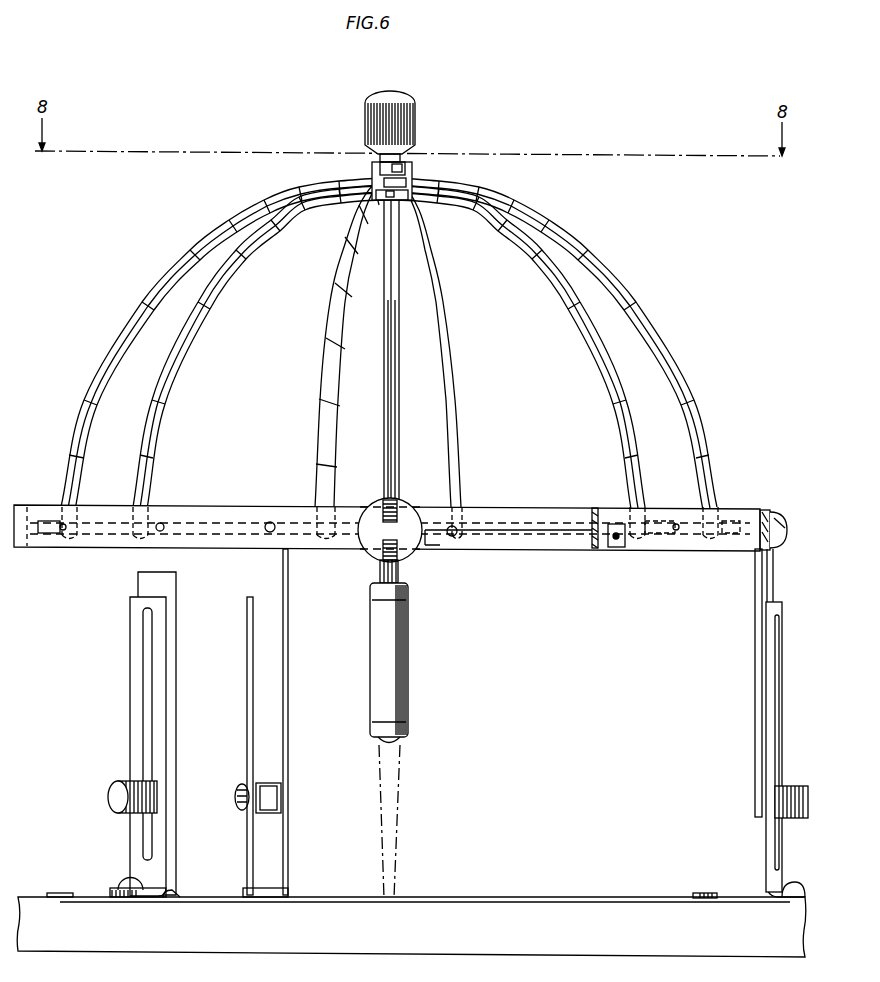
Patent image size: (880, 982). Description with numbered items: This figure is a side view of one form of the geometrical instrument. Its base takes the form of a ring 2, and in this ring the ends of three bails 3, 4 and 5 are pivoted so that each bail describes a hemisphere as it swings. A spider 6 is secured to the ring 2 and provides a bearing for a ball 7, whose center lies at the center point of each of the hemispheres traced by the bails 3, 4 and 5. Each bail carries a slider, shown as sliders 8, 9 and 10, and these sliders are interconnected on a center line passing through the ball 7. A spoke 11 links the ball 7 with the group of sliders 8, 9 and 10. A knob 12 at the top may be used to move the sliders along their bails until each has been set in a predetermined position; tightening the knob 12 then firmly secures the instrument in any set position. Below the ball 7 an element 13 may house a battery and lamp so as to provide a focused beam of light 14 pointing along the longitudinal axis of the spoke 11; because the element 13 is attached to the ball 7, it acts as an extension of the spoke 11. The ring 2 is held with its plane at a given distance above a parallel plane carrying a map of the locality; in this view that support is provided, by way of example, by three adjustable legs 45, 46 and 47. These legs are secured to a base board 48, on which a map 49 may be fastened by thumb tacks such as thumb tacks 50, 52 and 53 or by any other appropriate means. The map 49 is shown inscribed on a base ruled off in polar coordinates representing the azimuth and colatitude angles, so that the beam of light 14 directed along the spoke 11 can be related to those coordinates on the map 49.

The ring 2 is at (196, 505).
The bail 3 is at (327, 366).
The bail 4 is at (123, 336).
The bail 5 is at (183, 352).
The spider 6 is at (481, 533).
The ball 7 is at (404, 508).
The slider 8 is at (403, 167).
The slider 9 is at (407, 184).
The slider 10 is at (393, 215).
The spoke 11 is at (396, 345).
The knob 12 is at (414, 122).
The element 13 is at (408, 668).
The focused beam of light 14 is at (392, 794).
The adjustable leg 45 is at (764, 651).
The adjustable leg 46 is at (283, 651).
The adjustable leg 47 is at (176, 650).
The base board 48 is at (557, 953).
The map 49 is at (500, 900).
The thumb tack 50 is at (708, 893).
The thumb tack 52 is at (62, 892).
The thumb tack 53 is at (175, 891).